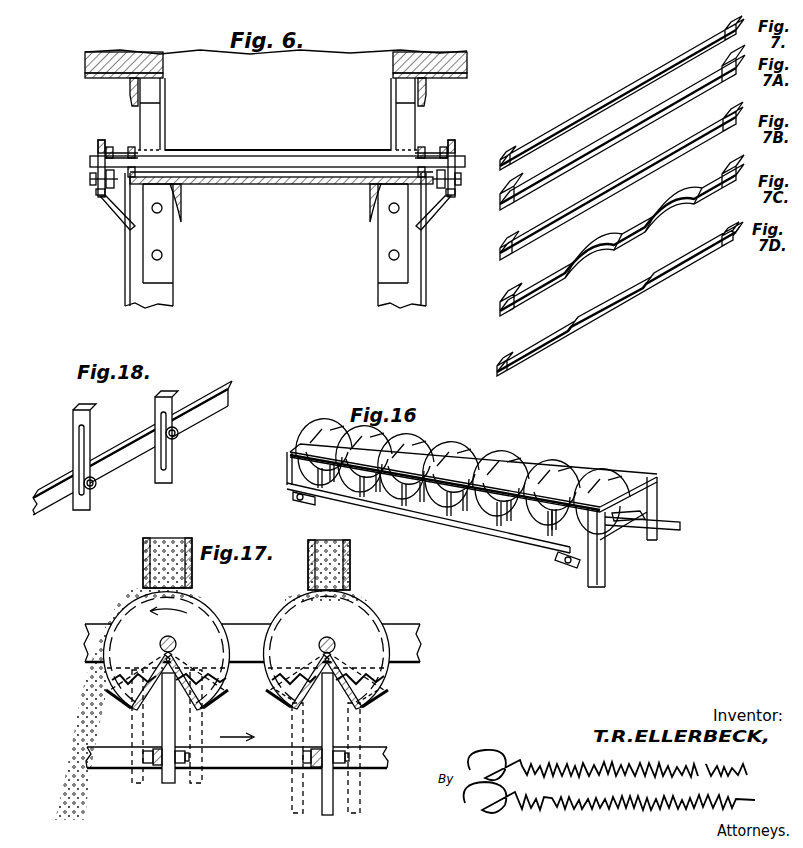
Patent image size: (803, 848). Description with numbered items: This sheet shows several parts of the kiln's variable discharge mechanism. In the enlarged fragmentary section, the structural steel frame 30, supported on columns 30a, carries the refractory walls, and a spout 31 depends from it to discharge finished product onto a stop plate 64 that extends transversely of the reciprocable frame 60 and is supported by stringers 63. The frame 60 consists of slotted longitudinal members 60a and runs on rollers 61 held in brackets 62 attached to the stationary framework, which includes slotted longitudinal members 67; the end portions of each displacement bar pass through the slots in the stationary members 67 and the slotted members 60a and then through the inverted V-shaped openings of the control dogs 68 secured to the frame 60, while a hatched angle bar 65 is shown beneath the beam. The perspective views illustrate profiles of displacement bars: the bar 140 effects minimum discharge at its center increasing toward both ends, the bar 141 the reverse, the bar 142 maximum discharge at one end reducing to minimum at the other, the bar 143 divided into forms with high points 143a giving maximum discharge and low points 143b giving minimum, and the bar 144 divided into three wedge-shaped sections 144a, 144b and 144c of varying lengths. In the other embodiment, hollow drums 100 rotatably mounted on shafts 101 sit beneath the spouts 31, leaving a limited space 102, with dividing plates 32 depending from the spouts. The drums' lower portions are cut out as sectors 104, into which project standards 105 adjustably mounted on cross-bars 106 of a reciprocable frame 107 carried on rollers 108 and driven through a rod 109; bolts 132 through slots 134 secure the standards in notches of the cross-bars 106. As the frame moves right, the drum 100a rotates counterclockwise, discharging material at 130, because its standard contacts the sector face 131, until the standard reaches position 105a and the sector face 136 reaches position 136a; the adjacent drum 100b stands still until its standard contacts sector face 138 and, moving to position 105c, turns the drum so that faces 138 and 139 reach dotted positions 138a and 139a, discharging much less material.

In FIG. 6, the structural steel frame 30 is at (437, 50).
In FIG. 6, the columns 30a is at (150, 118).
In FIG. 6, the spouts 31 is at (343, 90).
In FIG. 17, the spouts 31 is at (143, 562).
In FIG. 17, the dividing plates 32 is at (138, 590).
In FIG. 6, the reciprocable frame 60 is at (457, 130).
In FIG. 6, the slotted longitudinal members 60a is at (103, 145).
In FIG. 6, the rollers 61 is at (90, 180).
In FIG. 6, the brackets 62 is at (112, 212).
In FIG. 6, the stringers 63 is at (183, 196).
In FIG. 6, the stop plates 64 is at (297, 168).
In FIG. 6, the angle bar 65 is at (243, 186).
In FIG. 6, the slotted longitudinal members 67 is at (131, 147).
In FIG. 6, the control dogs 68 is at (98, 195).
In FIG. 16, the hollow drums 100 is at (390, 445).
In FIG. 17, the drum 100a is at (215, 680).
In FIG. 17, the drum 100b is at (389, 690).
In FIG. 16, the shafts 101 is at (480, 468).
In FIG. 17, the shafts 101 is at (162, 642).
In FIG. 17, the limited space 102 is at (185, 592).
In FIG. 17, the sectors 104 is at (175, 665).
In FIG. 18, the standards 105 is at (93, 410).
In FIG. 16, the standards 105 is at (515, 535).
In FIG. 17, the standards 105 is at (168, 786).
In FIG. 17, the dotted position of standard 105a is at (196, 785).
In FIG. 17, the dotted position of standard 105c is at (362, 806).
In FIG. 18, the cross-bars 106 is at (132, 448).
In FIG. 16, the cross-bars 106 is at (400, 500).
In FIG. 17, the cross-bars 106 is at (148, 772).
In FIG. 16, the reciprocable frame 107 is at (440, 522).
In FIG. 17, the reciprocable frame 107 is at (205, 760).
In FIG. 16, the rollers 108 is at (300, 503).
In FIG. 16, the rod 109 is at (662, 528).
In FIG. 17, the discharged material 130 is at (72, 722).
In FIG. 17, the sector face 131 is at (233, 729).
In FIG. 18, the bolts 132 is at (97, 483).
In FIG. 17, the bolts 132 is at (187, 758).
In FIG. 18, the slots 134 is at (84, 440).
In FIG. 17, the sector face 136 is at (122, 675).
In FIG. 17, the moved position of sector face 136a is at (150, 708).
In FIG. 17, the sector face 138 is at (350, 716).
In FIG. 17, the dotted position of sector face 138a is at (368, 704).
In FIG. 17, the sector face 139 is at (312, 676).
In FIG. 17, the dotted position of sector face 139a is at (286, 704).
In FIG. 7, the displacement bar 140 is at (628, 72).
In FIG. 7A, the displacement bar 141 is at (624, 118).
In FIG. 7B, the displacement bar 142 is at (638, 152).
In FIG. 7C, the displacement bar 143 is at (500, 312).
In FIG. 7C, the high points 143a is at (582, 262).
In FIG. 7C, the low points 143b is at (615, 258).
In FIG. 7D, the displacement bar 144 is at (500, 372).
In FIG. 7D, the wedge-shaped section 144a is at (532, 344).
In FIG. 7D, the wedge-shaped section 144b is at (600, 305).
In FIG. 7D, the wedge-shaped section 144c is at (680, 258).